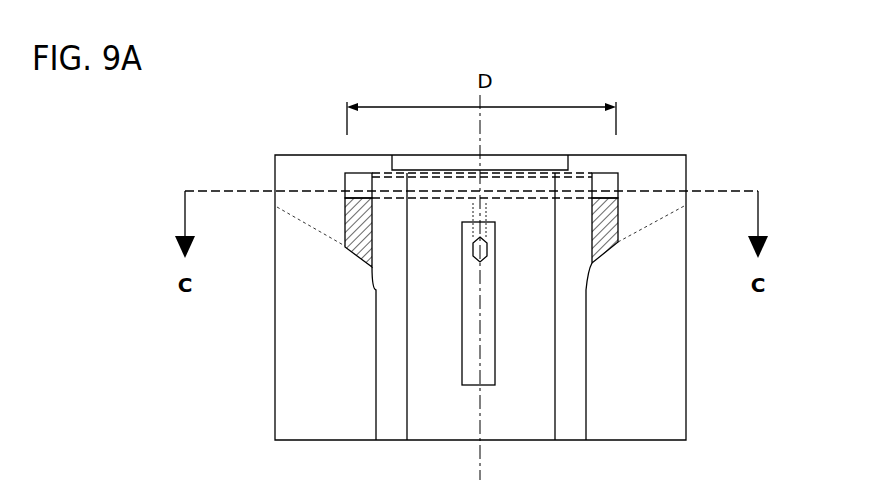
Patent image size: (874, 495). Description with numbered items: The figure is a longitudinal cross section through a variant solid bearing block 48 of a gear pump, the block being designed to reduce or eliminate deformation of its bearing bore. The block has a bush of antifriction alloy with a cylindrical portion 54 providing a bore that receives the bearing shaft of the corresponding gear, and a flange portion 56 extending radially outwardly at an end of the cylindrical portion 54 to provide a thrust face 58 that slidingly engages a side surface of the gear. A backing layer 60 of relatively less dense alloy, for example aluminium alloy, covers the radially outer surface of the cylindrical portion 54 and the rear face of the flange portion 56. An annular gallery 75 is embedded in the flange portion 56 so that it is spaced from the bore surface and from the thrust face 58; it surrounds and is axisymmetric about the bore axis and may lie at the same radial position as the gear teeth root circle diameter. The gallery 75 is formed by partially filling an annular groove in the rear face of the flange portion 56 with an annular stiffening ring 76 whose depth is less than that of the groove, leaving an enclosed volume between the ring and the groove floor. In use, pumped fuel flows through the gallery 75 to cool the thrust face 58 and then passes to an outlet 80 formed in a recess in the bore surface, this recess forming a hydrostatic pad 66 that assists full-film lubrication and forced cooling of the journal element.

The solid bearing block 48 is at (504, 249).
The cylindrical portion 54 is at (574, 416).
The flange portion 56 is at (660, 178).
The thrust face 58 is at (640, 155).
The backing layer 60 is at (307, 380).
The hydrostatic pad 66 is at (495, 347).
The annular gallery 75 is at (345, 178).
The annular stiffening ring 76 is at (345, 215).
The outlet 80 is at (487, 253).